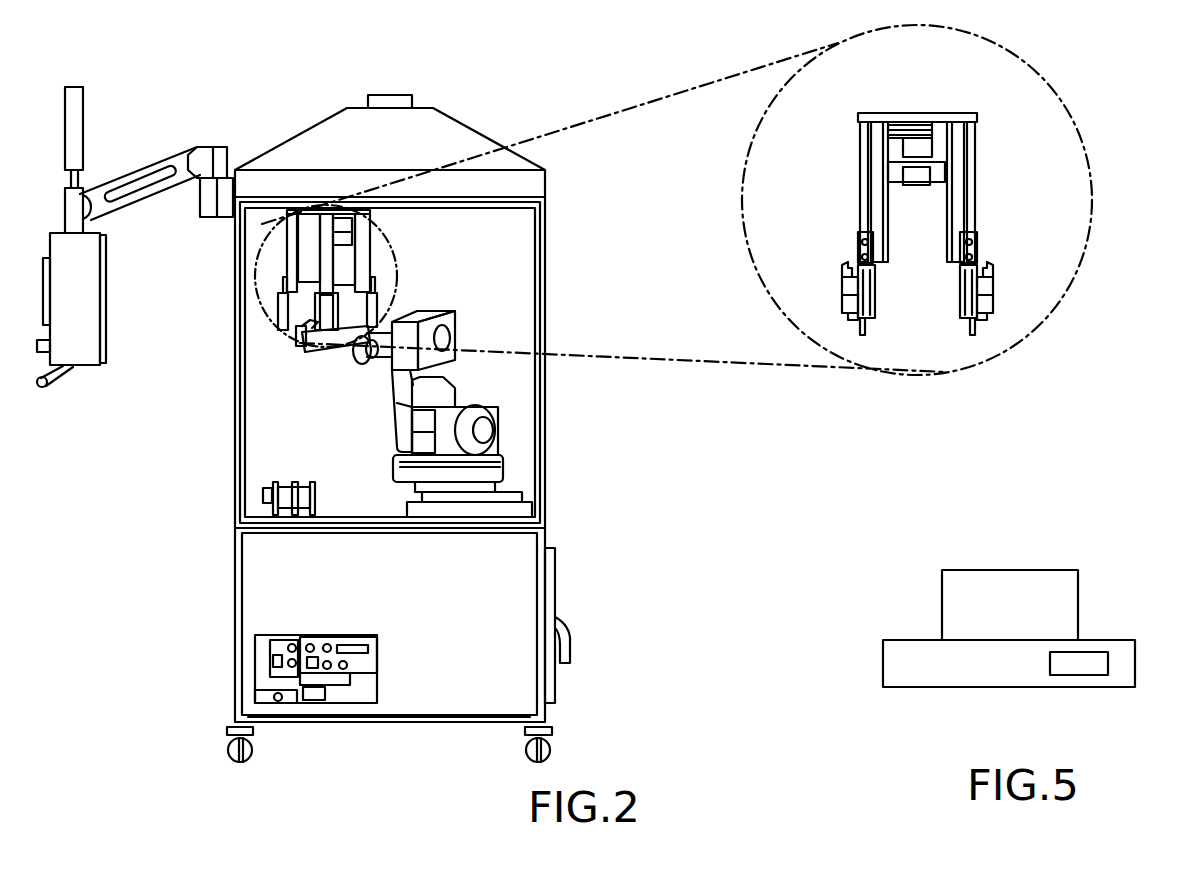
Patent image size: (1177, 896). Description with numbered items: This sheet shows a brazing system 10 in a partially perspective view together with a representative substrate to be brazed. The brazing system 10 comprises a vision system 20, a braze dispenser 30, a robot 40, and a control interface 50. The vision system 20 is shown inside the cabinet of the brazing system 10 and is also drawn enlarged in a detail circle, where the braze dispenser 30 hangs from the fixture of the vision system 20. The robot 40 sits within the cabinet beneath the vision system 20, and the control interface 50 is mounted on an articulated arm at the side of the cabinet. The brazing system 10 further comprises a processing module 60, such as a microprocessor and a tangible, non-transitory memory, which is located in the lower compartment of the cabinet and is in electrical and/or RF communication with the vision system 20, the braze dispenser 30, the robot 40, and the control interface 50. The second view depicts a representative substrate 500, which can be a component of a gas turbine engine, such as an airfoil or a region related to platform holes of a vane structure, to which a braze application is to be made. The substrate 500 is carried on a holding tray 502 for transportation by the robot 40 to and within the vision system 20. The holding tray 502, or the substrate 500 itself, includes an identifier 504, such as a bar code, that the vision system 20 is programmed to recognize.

In FIG. 2, the brazing system 10 is at (524, 96).
In FIG. 2, the vision system 20 is at (932, 113).
In FIG. 2, the braze dispenser 30 is at (876, 322).
In FIG. 2, the robot 40 is at (453, 313).
In FIG. 2, the control interface 50 is at (85, 365).
In FIG. 2, the processing module 60 is at (333, 703).
In FIG. 5, the substrate 500 is at (998, 613).
In FIG. 5, the holding tray 502 is at (1138, 663).
In FIG. 5, the identifier 504 is at (1090, 675).